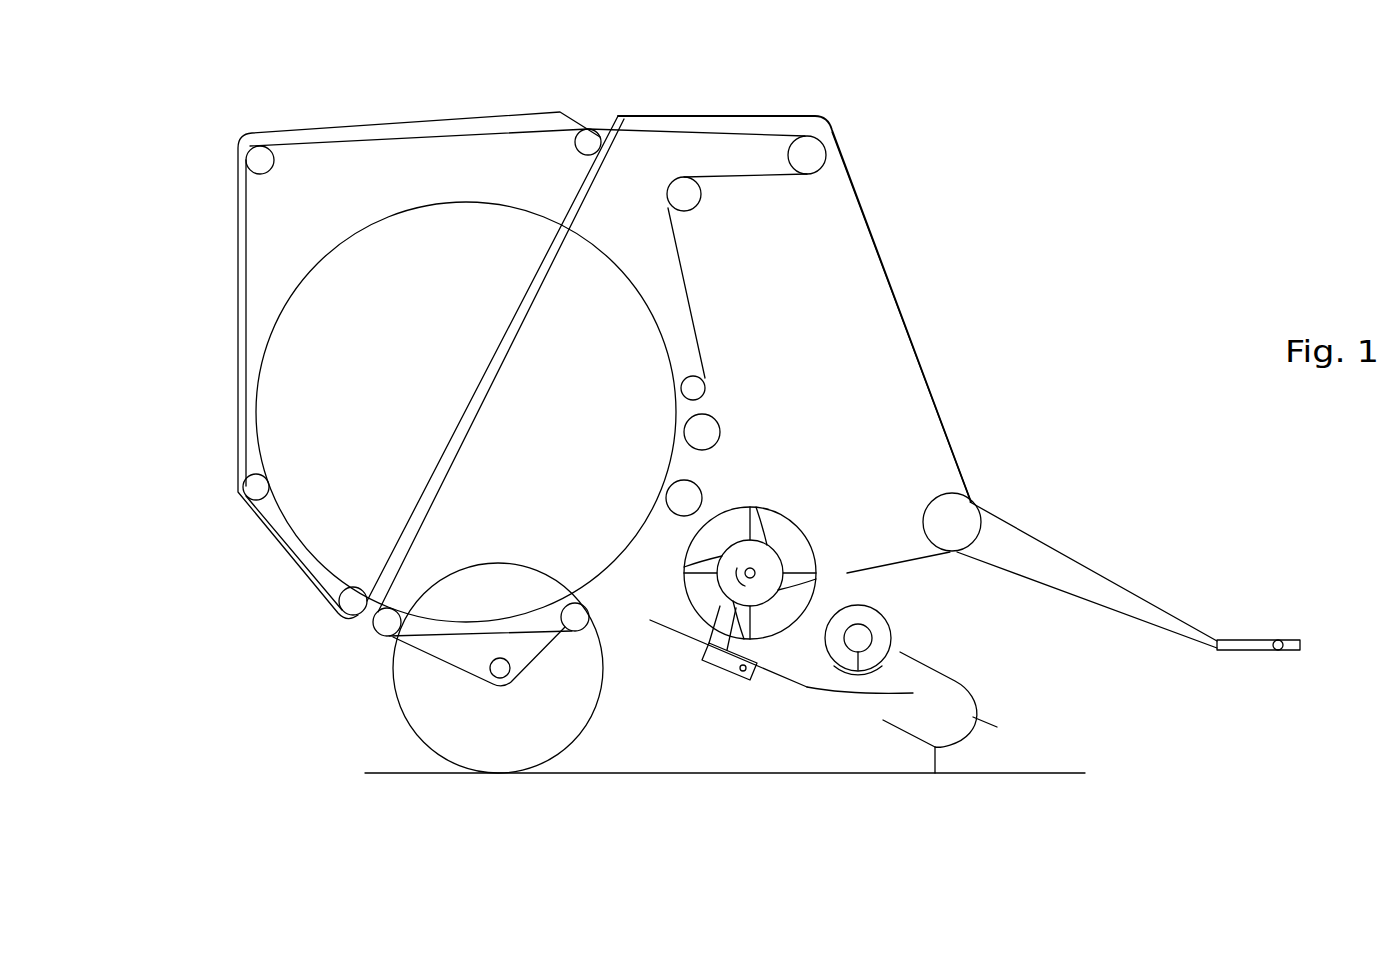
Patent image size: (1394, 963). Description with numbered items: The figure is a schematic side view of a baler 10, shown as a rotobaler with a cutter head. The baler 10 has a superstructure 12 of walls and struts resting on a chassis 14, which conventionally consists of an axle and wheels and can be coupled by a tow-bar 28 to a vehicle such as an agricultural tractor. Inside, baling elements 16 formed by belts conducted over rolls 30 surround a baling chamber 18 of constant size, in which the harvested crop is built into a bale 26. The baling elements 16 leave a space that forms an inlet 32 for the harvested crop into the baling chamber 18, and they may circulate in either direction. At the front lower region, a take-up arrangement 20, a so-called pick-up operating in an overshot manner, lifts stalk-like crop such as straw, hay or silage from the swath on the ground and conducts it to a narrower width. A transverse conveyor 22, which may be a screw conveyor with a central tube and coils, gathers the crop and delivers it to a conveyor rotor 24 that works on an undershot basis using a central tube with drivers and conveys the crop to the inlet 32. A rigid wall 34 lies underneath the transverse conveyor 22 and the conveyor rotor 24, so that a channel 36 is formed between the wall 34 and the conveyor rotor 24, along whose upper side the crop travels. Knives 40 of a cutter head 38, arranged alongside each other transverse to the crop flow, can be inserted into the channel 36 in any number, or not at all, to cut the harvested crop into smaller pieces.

The baler 10 is at (805, 102).
The superstructure 12 is at (943, 420).
The chassis 14 is at (370, 690).
The baling elements 16 is at (737, 192).
The baling chamber 18 is at (350, 390).
The take-up arrangement 20 is at (985, 745).
The transverse conveyor 22 is at (853, 658).
The conveyor rotor 24 is at (790, 522).
The bale 26 is at (466, 412).
The tow-bar 28 is at (1083, 590).
The rolls 30 is at (728, 408).
The inlet 32 is at (645, 585).
The rigid wall 34 is at (817, 690).
The channel 36 is at (787, 650).
The cutter head 38 is at (731, 690).
The knives 40 is at (700, 633).